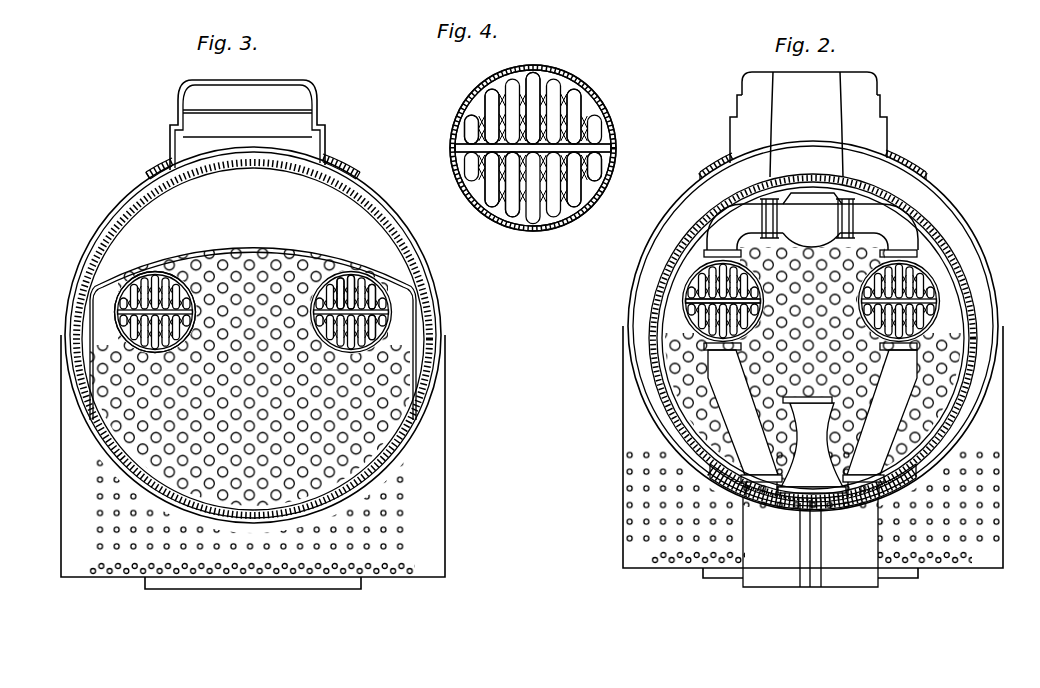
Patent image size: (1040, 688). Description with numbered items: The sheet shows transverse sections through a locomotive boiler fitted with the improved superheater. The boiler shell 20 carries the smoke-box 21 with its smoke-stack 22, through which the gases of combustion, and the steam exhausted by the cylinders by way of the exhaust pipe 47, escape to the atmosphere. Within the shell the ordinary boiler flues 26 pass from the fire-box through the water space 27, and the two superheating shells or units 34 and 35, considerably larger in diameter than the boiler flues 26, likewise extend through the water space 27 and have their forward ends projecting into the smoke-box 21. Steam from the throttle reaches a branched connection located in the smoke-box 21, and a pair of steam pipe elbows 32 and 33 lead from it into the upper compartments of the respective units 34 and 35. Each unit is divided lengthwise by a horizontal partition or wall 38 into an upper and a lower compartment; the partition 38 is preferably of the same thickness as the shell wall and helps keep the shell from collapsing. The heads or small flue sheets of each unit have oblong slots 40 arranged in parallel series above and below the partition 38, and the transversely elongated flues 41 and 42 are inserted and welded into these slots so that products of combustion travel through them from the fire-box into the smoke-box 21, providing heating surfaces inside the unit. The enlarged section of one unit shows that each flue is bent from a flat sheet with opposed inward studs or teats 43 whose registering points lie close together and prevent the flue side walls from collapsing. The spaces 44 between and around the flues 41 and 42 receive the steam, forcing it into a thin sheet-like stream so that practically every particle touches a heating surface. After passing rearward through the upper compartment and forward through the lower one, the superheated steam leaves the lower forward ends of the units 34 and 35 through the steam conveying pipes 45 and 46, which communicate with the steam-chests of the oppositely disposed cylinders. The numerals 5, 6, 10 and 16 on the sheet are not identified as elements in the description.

In FIG. 4, the pipe 5 is at (533, 66).
In FIG. 2, the pipe 5 is at (897, 268).
In FIG. 4, the distributor bar 6 is at (452, 148).
In FIG. 2, the distributor bar 6 is at (690, 318).
In FIG. 2, the drum shell 10 is at (962, 256).
In FIG. 2, the coupling 16 is at (765, 238).
In FIG. 3, the boiler shell 20 is at (253, 334).
In FIG. 2, the boiler shell 20 is at (647, 374).
In FIG. 2, the smoke-box 21 is at (660, 328).
In FIG. 2, the smoke-stack 22 is at (808, 124).
In FIG. 3, the boiler flues 26 is at (400, 393).
In FIG. 3, the water space 27 is at (252, 515).
In FIG. 2, the water space 27 is at (697, 430).
In FIG. 2, the steam pipe elbow 32 is at (759, 227).
In FIG. 3, the steam pipe elbow 33 is at (360, 283).
In FIG. 2, the steam pipe elbow 33 is at (850, 221).
In FIG. 3, the superheating shell 34 is at (158, 272).
In FIG. 4, the superheating shell 34 is at (602, 172).
In FIG. 2, the superheating shell 34 is at (688, 284).
In FIG. 2, the superheating shell 35 is at (945, 291).
In FIG. 3, the partition 38 is at (118, 319).
In FIG. 4, the partition 38 is at (612, 156).
In FIG. 3, the oblong slots 40 is at (388, 322).
In FIG. 4, the oblong slots 40 is at (464, 122).
In FIG. 3, the oblong flue 41 is at (366, 297).
In FIG. 4, the oblong flue 41 is at (568, 92).
In FIG. 3, the oblong flue 42 is at (374, 335).
In FIG. 4, the oblong flue 42 is at (492, 216).
In FIG. 4, the studs 43 is at (499, 84).
In FIG. 4, the spaces 44 is at (541, 88).
In FIG. 2, the steam conveying pipe 45 is at (744, 423).
In FIG. 2, the steam conveying pipe 46 is at (880, 423).
In FIG. 2, the exhaust pipe 47 is at (812, 445).